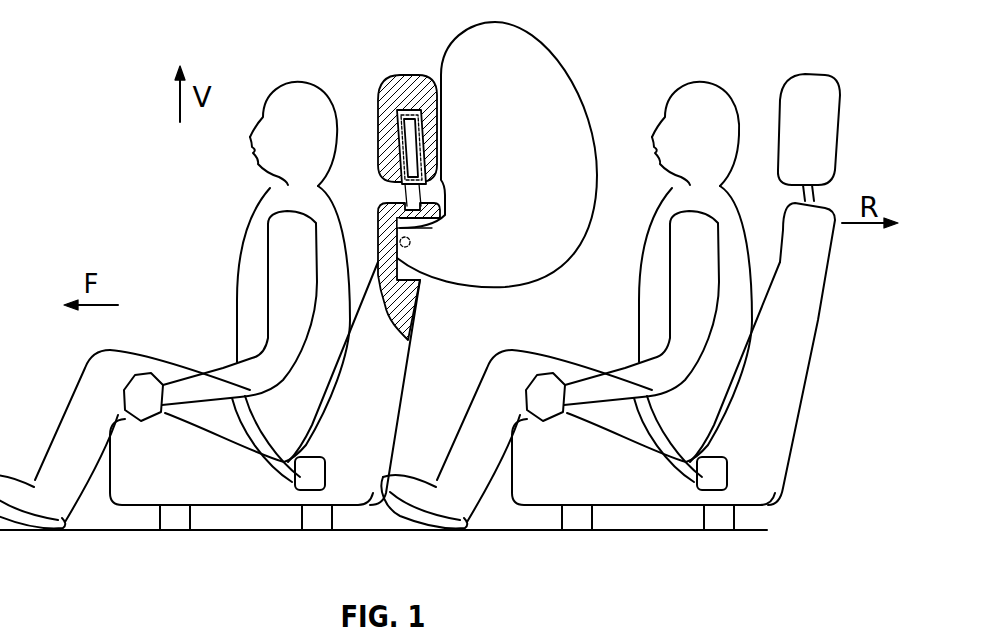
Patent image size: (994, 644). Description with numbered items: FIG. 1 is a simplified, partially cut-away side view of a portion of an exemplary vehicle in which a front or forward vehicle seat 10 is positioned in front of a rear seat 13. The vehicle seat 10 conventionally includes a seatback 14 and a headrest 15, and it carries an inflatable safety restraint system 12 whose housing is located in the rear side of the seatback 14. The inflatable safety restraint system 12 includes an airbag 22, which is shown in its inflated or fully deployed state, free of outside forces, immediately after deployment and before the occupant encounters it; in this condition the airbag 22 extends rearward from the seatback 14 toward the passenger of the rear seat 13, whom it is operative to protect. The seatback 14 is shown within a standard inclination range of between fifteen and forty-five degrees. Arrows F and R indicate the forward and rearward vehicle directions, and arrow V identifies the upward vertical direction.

The vehicle seat 10 is at (376, 293).
The inflatable safety restraint system 12 is at (518, 143).
The rear seat 13 is at (807, 370).
The seatback 14 is at (410, 360).
The headrest 15 is at (392, 80).
The airbag 22 is at (438, 60).